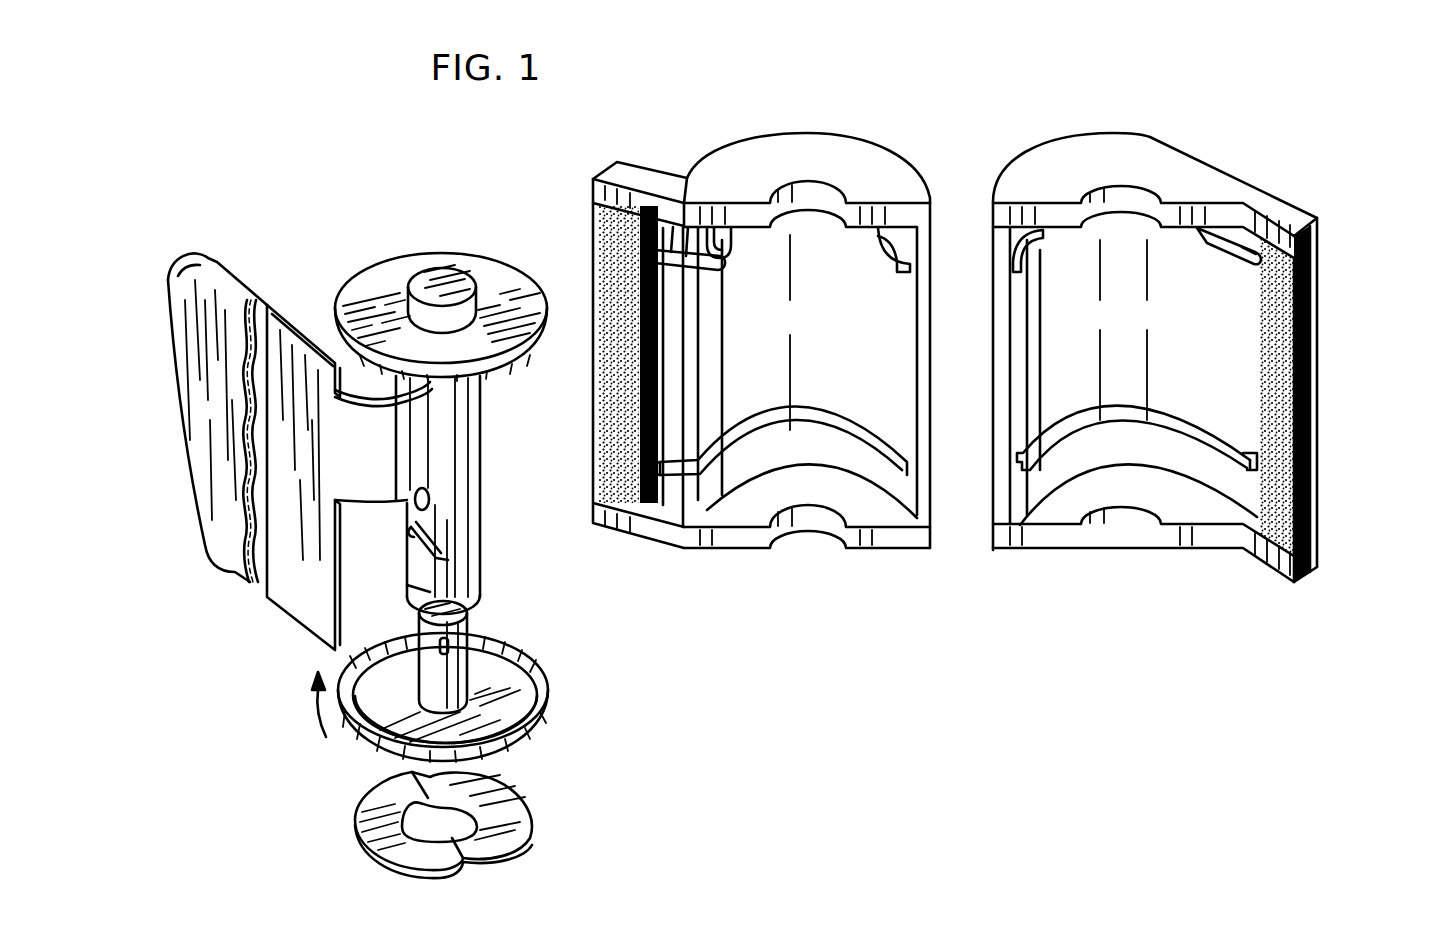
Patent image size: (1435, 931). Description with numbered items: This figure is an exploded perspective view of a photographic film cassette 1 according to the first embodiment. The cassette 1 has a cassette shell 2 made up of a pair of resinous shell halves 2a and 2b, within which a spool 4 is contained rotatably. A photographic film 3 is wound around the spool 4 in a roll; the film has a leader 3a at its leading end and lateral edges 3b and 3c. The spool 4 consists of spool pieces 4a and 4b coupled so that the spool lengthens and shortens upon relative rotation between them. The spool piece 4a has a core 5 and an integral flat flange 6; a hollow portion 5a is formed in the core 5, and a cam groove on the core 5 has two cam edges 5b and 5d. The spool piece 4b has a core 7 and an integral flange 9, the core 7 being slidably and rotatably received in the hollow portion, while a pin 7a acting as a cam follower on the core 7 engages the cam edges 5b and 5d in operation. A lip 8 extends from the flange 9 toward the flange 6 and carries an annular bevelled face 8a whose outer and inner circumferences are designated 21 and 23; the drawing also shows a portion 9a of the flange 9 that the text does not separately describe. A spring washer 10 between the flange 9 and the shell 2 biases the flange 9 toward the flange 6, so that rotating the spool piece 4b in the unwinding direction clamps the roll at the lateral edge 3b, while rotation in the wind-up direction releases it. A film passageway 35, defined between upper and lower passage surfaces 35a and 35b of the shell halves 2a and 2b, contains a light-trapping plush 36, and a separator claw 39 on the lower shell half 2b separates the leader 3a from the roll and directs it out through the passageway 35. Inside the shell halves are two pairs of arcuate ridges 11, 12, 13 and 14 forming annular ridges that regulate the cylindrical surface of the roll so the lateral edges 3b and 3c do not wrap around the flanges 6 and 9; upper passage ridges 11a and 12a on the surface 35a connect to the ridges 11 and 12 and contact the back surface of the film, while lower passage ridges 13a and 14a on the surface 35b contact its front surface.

The photographic film cassette 1 is at (1372, 132).
The cassette shell 2 is at (830, 630).
The shell half 2a is at (1060, 555).
The lower shell half 2b is at (870, 555).
The photographic film 3 is at (197, 238).
The leader 3a is at (211, 261).
The lateral edge 3b is at (245, 565).
The lateral edge 3c is at (256, 300).
The spool 4 is at (598, 558).
The spool piece 4a is at (500, 478).
The spool piece 4b is at (570, 597).
The core 5 is at (480, 566).
The hollow portion 5a is at (408, 602).
The cam edge 5b is at (425, 546).
The cam edge 5d is at (433, 555).
The flat flange 6 is at (438, 252).
The core 7 is at (470, 622).
The pin 7a is at (430, 665).
The lip 8 is at (355, 735).
The bevelled face 8a is at (535, 724).
The flange 9 is at (545, 665).
The base plate inner face 9a is at (512, 688).
The spring washer 10 is at (360, 820).
The arcuate ridge 11 is at (1208, 242).
The upper passage ridge 11a is at (1244, 262).
The arcuate ridge 12 is at (1108, 410).
The upper passage ridge 12a is at (1250, 462).
The arcuate ridge 13 is at (880, 242).
The lower passage ridge 13a is at (668, 245).
The arcuate ridge 14 is at (807, 408).
The lower passage ridge 14a is at (688, 478).
The outer circumference 21 is at (520, 745).
The inner circumference 23 is at (535, 722).
The film passageway 35 is at (1325, 366).
The upper passage surface 35a is at (1312, 215).
The lower passage surface 35b is at (608, 166).
The plush 36 is at (606, 380).
The separator claw 39 is at (722, 262).